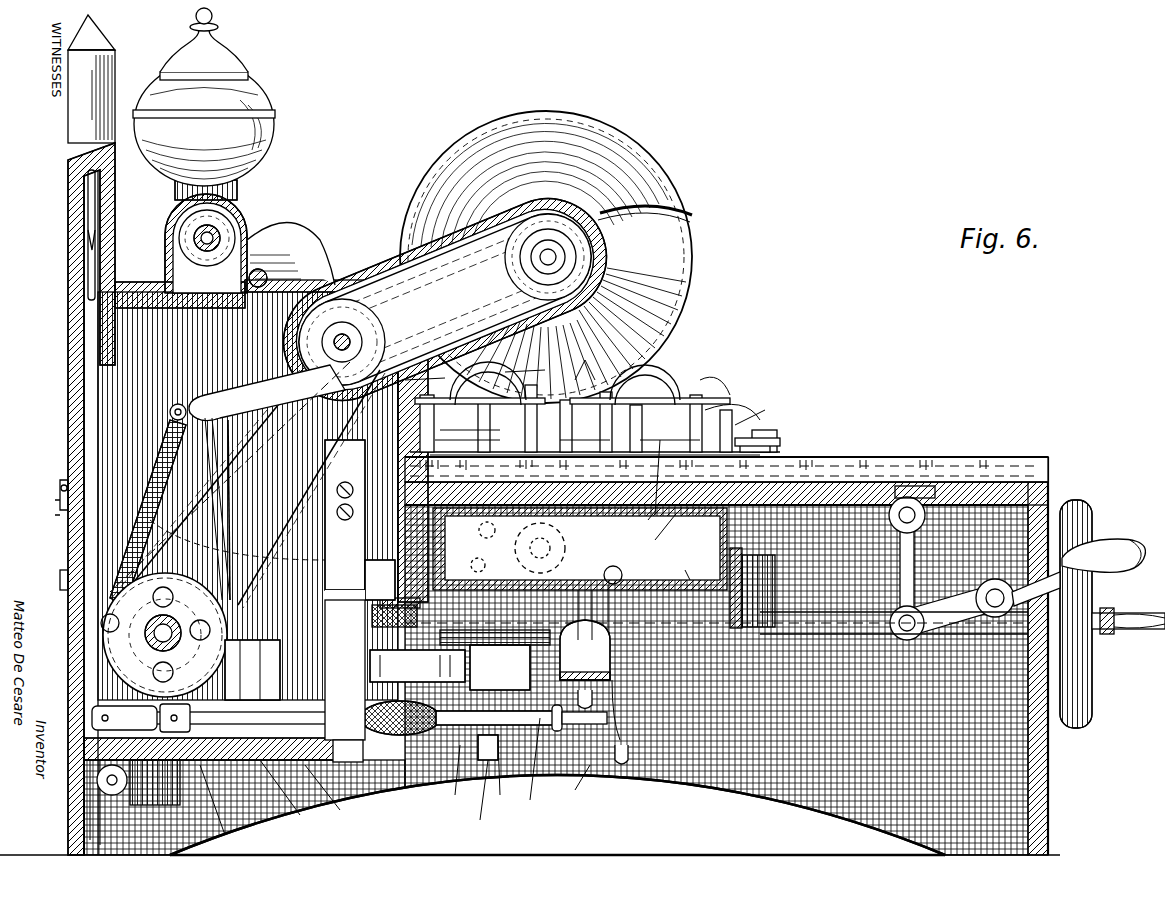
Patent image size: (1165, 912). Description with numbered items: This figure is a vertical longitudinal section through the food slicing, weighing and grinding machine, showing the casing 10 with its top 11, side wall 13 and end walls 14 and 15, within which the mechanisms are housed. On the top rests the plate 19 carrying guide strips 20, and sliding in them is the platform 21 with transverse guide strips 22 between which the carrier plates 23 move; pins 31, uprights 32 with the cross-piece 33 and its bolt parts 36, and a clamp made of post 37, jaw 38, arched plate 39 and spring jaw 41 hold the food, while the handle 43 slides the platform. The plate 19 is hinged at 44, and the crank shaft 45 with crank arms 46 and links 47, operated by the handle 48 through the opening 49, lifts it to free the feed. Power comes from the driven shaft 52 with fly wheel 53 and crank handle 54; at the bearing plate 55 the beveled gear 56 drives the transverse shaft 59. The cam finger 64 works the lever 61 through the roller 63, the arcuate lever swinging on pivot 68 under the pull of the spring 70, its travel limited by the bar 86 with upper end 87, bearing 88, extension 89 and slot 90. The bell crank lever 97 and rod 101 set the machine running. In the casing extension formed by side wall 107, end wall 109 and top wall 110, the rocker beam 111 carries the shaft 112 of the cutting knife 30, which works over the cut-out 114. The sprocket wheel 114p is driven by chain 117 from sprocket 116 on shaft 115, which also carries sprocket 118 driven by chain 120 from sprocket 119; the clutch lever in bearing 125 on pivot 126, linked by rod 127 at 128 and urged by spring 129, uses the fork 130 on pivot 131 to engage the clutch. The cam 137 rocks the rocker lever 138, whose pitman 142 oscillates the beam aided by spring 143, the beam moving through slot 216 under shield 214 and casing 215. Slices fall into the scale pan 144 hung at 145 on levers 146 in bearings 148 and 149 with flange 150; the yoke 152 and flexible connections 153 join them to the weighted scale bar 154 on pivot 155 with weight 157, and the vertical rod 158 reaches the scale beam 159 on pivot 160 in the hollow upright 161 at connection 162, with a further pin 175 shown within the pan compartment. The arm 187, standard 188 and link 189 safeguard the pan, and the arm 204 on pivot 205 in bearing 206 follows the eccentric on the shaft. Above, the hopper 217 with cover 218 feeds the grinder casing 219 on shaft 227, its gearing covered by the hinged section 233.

The casing 10 is at (1050, 752).
The top 11 is at (1015, 448).
The side wall 13 is at (770, 785).
The end wall 14 is at (103, 650).
The end wall 15 is at (1048, 810).
The plate 19 is at (940, 460).
The guide strips 20 is at (855, 460).
The platform 21 is at (760, 433).
The guide strips 22 is at (607, 418).
The carrier plates 23 is at (595, 468).
The cutting knife 30 is at (670, 290).
The pins 31 is at (525, 358).
The uprights 32 is at (586, 374).
The cross-piece 33 is at (660, 375).
The finger 36 is at (598, 358).
The post 37 is at (760, 425).
The jaw 38 is at (732, 395).
The arched plate 39 is at (715, 376).
The spring jaw 41 is at (661, 525).
The handle 43 is at (762, 407).
The hinge 44 is at (60, 490).
The crank shaft 45 is at (990, 592).
The crank arms 46 is at (940, 612).
The links 47 is at (914, 565).
The handle 48 is at (1118, 550).
The opening 49 is at (1030, 608).
The driven shaft 52 is at (717, 623).
The fly wheel 53 is at (1092, 690).
The crank handle 54 is at (1140, 635).
The bearing plate 55 is at (235, 802).
The beveled gear 56 is at (557, 815).
The transverse shaft 59 is at (175, 600).
The lever 61 is at (333, 794).
The anti-friction roller 63 is at (292, 797).
The cam finger 64 is at (321, 646).
The horizontal pivot 68 is at (560, 548).
The contractile spring 70 is at (580, 787).
The bar 86 is at (480, 800).
The upper end 87 is at (494, 538).
The bearing 88 is at (467, 562).
The extension 89 is at (494, 775).
The slot 90 is at (446, 779).
The bell crank lever 97 is at (417, 666).
The rod 101 is at (495, 660).
The side wall 107 is at (248, 496).
The end wall 109 is at (70, 395).
The top wall 110 is at (316, 275).
The rocker beam 111 is at (445, 299).
The shaft 112 is at (560, 257).
The cut-out 114 is at (60, 582).
The sprocket wheel 114p is at (665, 200).
The shaft 115 is at (344, 330).
The sprocket wheel 116 is at (300, 345).
The endless chain 117 is at (600, 275).
The sprocket wheel 118 is at (254, 499).
The sprocket wheel 119 is at (100, 615).
The endless chain 120 is at (170, 412).
The bearing 125 is at (383, 539).
The pivot 126 is at (237, 534).
The rod 127 is at (345, 515).
The connection 128 is at (343, 632).
The retractile spring 129 is at (346, 677).
The fork 130 is at (267, 393).
The pivot 131 is at (406, 447).
The cam 137 is at (245, 510).
The rocker lever 138 is at (252, 670).
The pitman 142 is at (230, 477).
The retractile spring 143 is at (135, 460).
The scale pan 144 is at (687, 566).
The pivotal connections 145 is at (740, 540).
The levers 146 is at (582, 608).
The bearing 148 is at (753, 588).
The bearing 149 is at (574, 609).
The flange 150 is at (684, 484).
The yoke 152 is at (482, 568).
The flexible connections 153 is at (628, 722).
The weighted scale bar 154 is at (535, 772).
The horizontal pivot 155 is at (228, 718).
The adjustable weight 157 is at (405, 735).
The vertical rod 158 is at (80, 337).
The scale beam 159 is at (95, 210).
The pivot 160 is at (100, 195).
The hollow upright 161 is at (100, 65).
The pivotal connection 162 is at (88, 235).
The pin 175 is at (463, 521).
The arm 187 is at (585, 635).
The standard 188 is at (605, 565).
The link 189 is at (634, 587).
The arm 204 is at (95, 735).
The horizontal pivot 205 is at (110, 839).
The bearing 206 is at (165, 790).
The shield 214 is at (612, 148).
The casing 215 is at (420, 250).
The slot 216 is at (430, 376).
The hopper 217 is at (270, 143).
The removable cover 218 is at (250, 85).
The casing part 219 is at (240, 212).
The shaft 227 is at (248, 278).
The upper section 233 is at (290, 240).